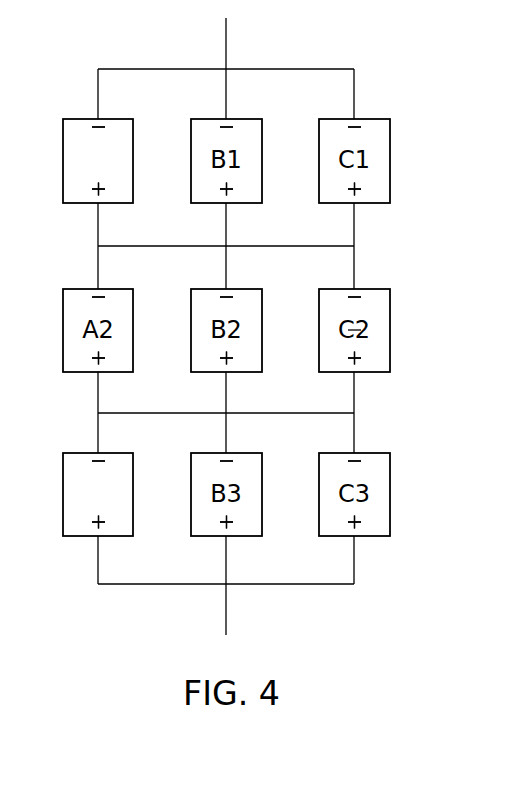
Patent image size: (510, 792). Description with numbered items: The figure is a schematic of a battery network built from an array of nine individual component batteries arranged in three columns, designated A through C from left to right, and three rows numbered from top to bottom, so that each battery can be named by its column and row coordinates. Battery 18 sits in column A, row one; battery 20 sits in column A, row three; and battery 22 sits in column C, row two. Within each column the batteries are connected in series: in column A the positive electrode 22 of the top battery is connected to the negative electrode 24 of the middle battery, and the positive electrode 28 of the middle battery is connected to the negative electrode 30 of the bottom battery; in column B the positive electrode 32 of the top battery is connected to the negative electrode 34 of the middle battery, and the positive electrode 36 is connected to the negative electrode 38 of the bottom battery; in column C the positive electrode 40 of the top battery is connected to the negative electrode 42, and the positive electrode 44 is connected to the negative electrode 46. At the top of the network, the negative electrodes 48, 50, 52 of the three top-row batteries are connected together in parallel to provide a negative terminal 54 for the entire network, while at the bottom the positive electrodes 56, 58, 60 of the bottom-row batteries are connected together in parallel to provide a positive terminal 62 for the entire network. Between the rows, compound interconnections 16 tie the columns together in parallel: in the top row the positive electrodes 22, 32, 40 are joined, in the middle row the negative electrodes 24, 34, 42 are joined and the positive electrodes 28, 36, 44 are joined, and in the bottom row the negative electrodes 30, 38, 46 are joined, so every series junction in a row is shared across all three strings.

The compound interconnections 16 is at (136, 246).
The battery 18 is at (63, 153).
The battery 20 is at (63, 497).
The positive electrode 22 is at (97, 205).
The negative electrode 24 is at (97, 288).
The positive electrode 28 is at (97, 374).
The negative electrode 30 is at (97, 452).
The positive electrode 32 is at (227, 205).
The negative electrode 34 is at (225, 288).
The positive electrode 36 is at (227, 374).
The negative electrode 38 is at (225, 452).
The positive electrode 40 is at (355, 205).
The negative electrode 42 is at (355, 288).
The positive electrode 44 is at (355, 374).
The negative electrode 46 is at (355, 452).
The negative electrode 48 is at (97, 117).
The negative electrode 50 is at (227, 118).
The negative electrode 52 is at (355, 118).
The negative terminal 54 is at (227, 22).
The positive electrode 56 is at (97, 538).
The positive electrode 58 is at (227, 538).
The positive electrode 60 is at (355, 538).
The positive terminal 62 is at (227, 627).